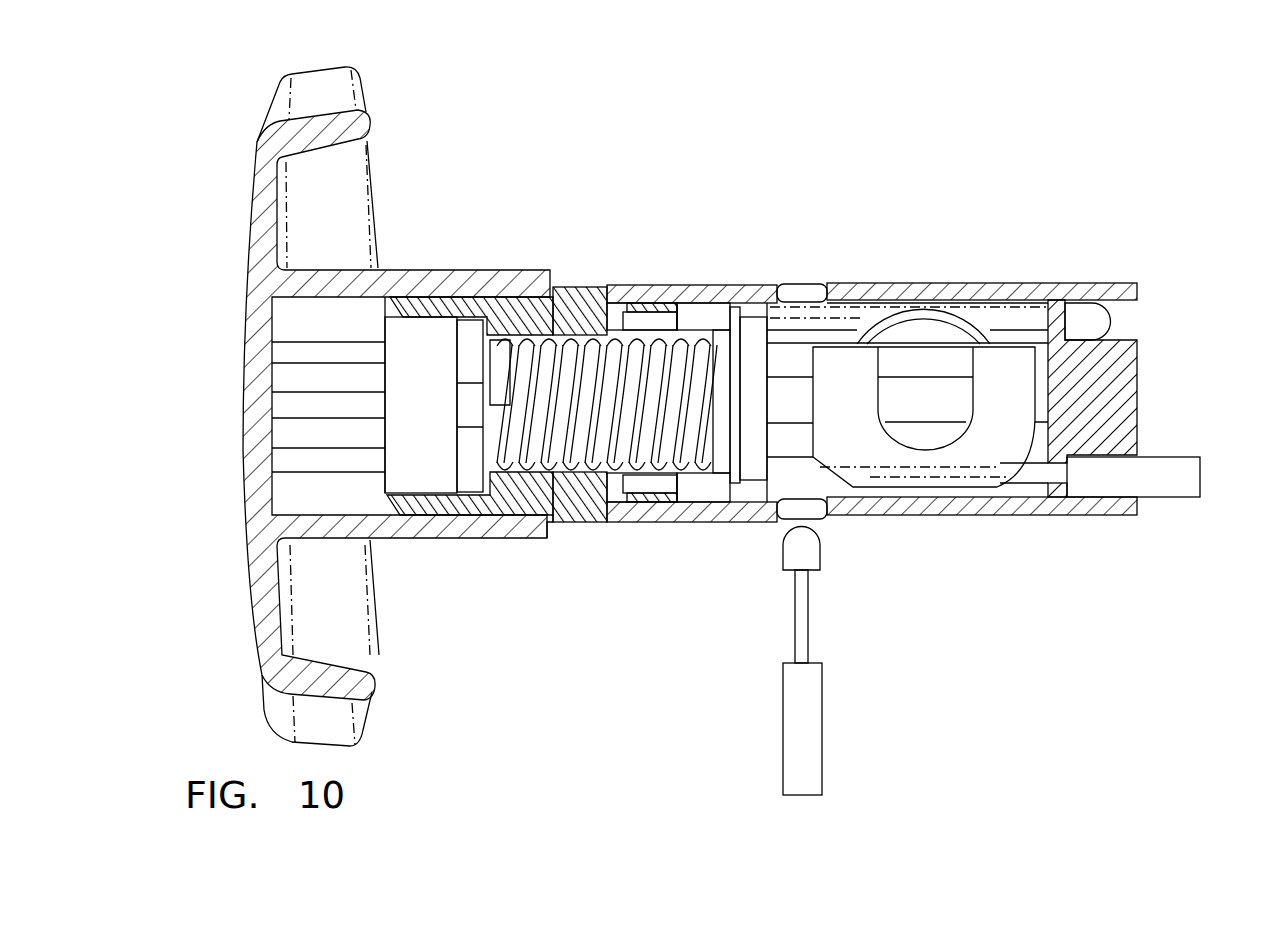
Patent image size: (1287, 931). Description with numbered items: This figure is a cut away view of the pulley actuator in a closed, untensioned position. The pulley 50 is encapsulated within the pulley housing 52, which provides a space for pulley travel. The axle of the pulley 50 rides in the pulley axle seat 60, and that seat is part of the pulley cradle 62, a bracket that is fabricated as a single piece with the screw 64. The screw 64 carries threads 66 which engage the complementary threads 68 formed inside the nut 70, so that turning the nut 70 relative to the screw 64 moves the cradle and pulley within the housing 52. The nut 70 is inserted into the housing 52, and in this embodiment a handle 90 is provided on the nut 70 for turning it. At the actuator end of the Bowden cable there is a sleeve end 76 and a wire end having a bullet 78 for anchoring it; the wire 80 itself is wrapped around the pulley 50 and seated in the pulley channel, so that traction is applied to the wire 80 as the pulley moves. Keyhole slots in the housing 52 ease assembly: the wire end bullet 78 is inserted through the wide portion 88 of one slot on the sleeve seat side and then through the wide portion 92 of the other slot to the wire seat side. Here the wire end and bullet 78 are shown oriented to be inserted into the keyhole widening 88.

The pulley 50 is at (938, 332).
The pulley housing 52 is at (858, 283).
The pulley axle seat 60 is at (934, 411).
The pulley cradle 62 is at (1006, 447).
The screw 64 is at (458, 350).
The threads 66 is at (562, 340).
The complimentary threads 68 is at (590, 290).
The nut 70 is at (565, 508).
The sleeve end 76 is at (1200, 478).
The wire end bullet 78 is at (1110, 318).
The wire 80 is at (795, 622).
The wide portion of slot 88 is at (785, 510).
The handle 90 is at (368, 104).
The wide portion of slot 92 is at (798, 283).